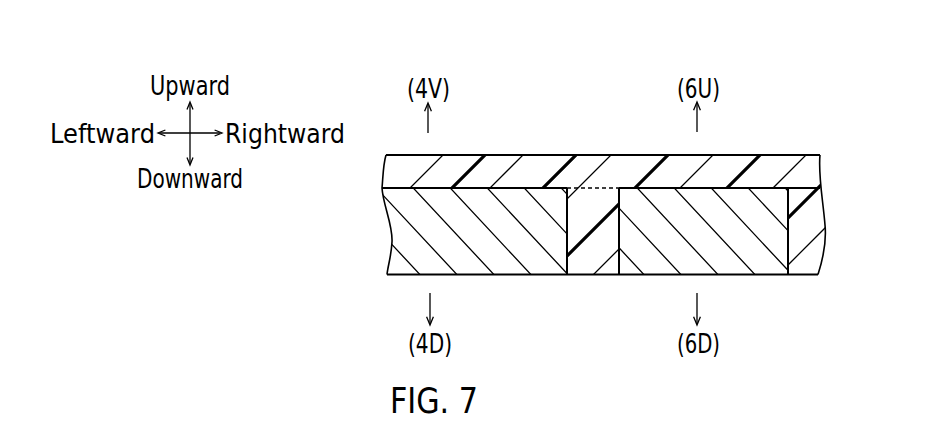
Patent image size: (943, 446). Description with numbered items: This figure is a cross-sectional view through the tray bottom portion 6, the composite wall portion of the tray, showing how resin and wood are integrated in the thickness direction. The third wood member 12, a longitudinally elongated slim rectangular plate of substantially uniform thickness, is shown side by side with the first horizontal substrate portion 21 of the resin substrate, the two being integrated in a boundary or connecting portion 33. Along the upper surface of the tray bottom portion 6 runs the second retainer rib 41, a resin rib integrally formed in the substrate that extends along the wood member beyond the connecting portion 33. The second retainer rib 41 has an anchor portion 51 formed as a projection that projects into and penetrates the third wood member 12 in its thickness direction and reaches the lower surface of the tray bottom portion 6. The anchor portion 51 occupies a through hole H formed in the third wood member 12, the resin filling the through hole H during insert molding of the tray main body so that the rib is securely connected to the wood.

The tray bottom portion 6 is at (610, 189).
The second retainer rib 41 is at (722, 172).
The anchor portion 51 is at (598, 207).
The through hole H is at (568, 260).
The third wood member 12 is at (668, 242).
The connecting portion 33 is at (786, 241).
The first horizontal substrate portion 21 is at (805, 233).